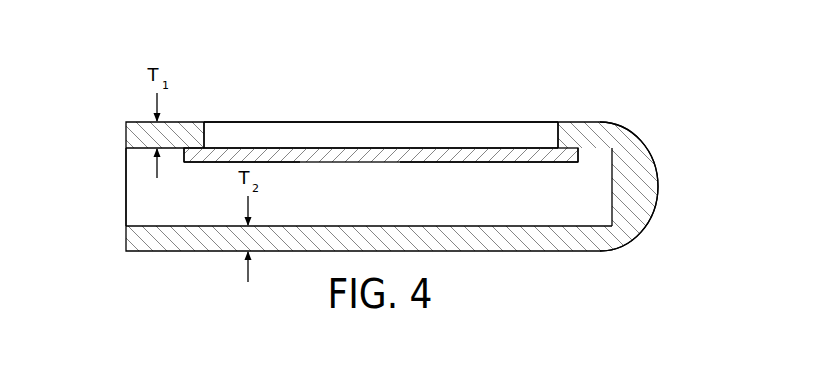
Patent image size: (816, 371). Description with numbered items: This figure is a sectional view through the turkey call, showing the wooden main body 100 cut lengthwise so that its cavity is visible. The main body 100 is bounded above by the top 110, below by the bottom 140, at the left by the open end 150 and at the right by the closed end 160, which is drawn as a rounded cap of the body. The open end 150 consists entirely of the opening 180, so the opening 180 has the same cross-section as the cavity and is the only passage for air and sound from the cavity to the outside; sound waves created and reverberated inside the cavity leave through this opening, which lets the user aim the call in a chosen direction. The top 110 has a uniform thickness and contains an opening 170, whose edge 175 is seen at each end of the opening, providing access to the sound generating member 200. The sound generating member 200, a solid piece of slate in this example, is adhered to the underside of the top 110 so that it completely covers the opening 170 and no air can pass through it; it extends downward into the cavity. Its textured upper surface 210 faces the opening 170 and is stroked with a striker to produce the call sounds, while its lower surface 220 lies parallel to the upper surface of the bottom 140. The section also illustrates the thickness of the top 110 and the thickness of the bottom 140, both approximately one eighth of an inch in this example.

The main body 100 is at (656, 168).
The top 110 is at (569, 122).
The bottom 140 is at (555, 251).
The open end 150 is at (126, 137).
The closed end 160 is at (657, 200).
The opening 170 is at (292, 135).
The edge 175 is at (204, 139).
The opening 180 is at (126, 190).
The sound generating member 200 is at (206, 152).
The upper surface 210 is at (451, 148).
The lower surface 220 is at (491, 162).